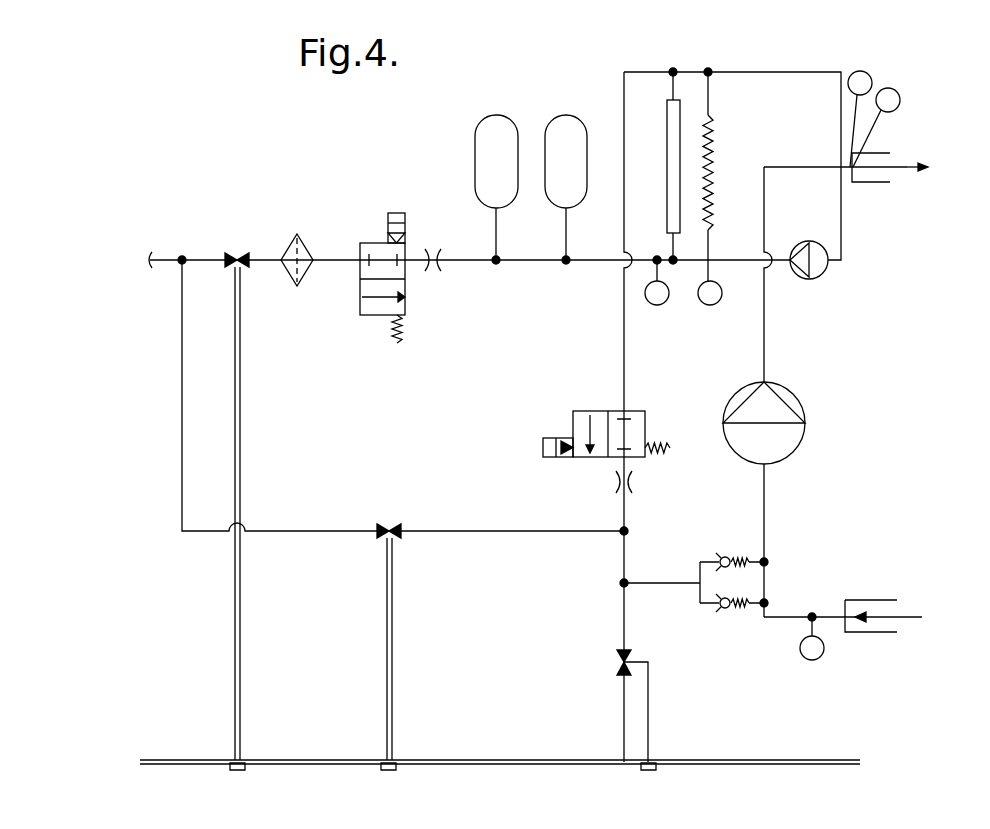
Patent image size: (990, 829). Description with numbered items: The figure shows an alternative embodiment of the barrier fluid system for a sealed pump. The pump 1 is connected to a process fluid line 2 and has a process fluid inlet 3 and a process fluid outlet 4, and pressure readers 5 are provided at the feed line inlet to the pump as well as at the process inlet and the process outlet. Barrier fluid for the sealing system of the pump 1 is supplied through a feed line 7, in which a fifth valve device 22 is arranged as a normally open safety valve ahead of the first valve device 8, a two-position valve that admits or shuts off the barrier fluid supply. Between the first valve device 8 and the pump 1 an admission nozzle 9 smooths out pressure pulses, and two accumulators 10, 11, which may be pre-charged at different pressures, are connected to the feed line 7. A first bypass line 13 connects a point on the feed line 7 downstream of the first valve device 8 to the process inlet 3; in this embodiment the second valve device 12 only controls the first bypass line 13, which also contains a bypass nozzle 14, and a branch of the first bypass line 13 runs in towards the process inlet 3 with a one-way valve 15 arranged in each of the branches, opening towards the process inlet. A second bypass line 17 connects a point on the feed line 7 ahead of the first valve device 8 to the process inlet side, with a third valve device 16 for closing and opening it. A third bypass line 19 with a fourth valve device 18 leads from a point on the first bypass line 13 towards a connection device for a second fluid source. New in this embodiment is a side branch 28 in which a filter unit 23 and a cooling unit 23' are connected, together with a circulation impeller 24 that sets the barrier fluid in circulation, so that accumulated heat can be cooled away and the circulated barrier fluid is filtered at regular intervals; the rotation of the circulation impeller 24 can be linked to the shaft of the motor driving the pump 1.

The pump 1 is at (800, 447).
The process fluid line 2 is at (764, 345).
The process fluid inlet 3 is at (922, 617).
The process fluid outlet 4 is at (907, 167).
The pressure reader 5 is at (662, 305).
The feed line 7 is at (167, 250).
The first valve device 8 is at (370, 243).
The admission nozzle 9 is at (433, 249).
The accumulator 10 is at (496, 124).
The accumulator 11 is at (568, 126).
The second valve device 12 is at (583, 411).
The first bypass line 13 is at (624, 322).
The bypass nozzle 14 is at (632, 482).
The one-way valve 15 is at (742, 552).
The third valve device 16 is at (393, 526).
The second bypass line 17 is at (182, 480).
The fourth valve device 18 is at (620, 658).
The third bypass line 19 is at (624, 708).
The fifth valve device 22 is at (235, 250).
The filter unit 23 is at (657, 148).
The cooling unit 23' is at (744, 186).
The circulation impeller 24 is at (822, 270).
The side branch 28 is at (842, 233).